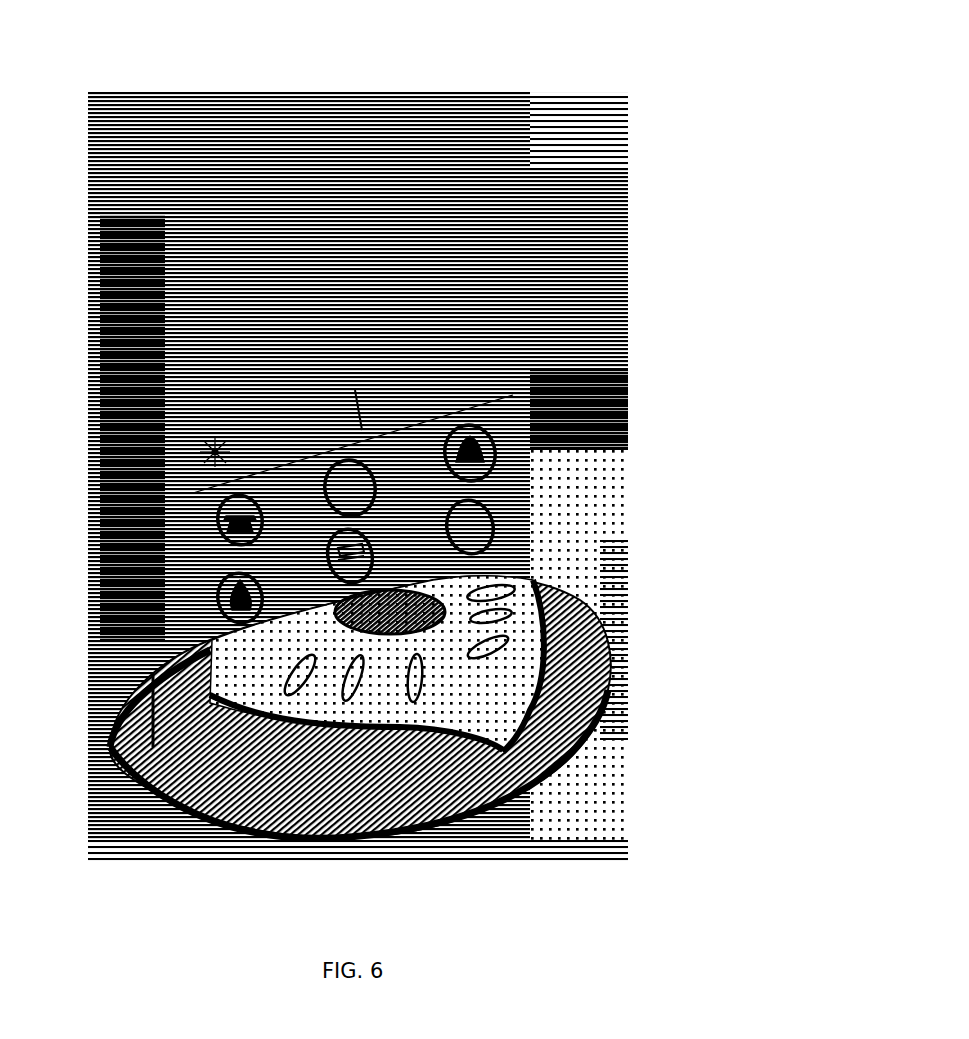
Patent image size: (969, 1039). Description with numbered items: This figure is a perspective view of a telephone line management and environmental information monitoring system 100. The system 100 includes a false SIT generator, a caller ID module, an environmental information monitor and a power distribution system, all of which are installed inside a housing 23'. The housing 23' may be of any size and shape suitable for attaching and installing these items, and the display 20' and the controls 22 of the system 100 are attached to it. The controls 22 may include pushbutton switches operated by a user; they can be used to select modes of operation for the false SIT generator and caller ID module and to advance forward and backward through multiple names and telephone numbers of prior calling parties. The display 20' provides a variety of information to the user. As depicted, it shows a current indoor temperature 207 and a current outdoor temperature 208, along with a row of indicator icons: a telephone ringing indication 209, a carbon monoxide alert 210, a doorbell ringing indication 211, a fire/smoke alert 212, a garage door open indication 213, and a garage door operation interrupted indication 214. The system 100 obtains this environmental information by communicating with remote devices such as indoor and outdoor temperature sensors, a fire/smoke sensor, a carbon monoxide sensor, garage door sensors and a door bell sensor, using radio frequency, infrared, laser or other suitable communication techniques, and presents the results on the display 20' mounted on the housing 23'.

The telephone line management and environmental information monitoring system 100 is at (114, 79).
The display 20' is at (282, 255).
The current indoor temperature 207 is at (420, 350).
The current outdoor temperature 208 is at (490, 330).
The doorbell ringing indication 211 is at (497, 423).
The garage fault indicator 214 is at (497, 503).
The carbon monoxide alert 210 is at (377, 474).
The garage door open indication 213 is at (378, 546).
The telephone ringing indication 209 is at (213, 537).
The fire/smoke alert 212 is at (214, 608).
The controls 22 is at (521, 614).
The housing 23' is at (360, 740).